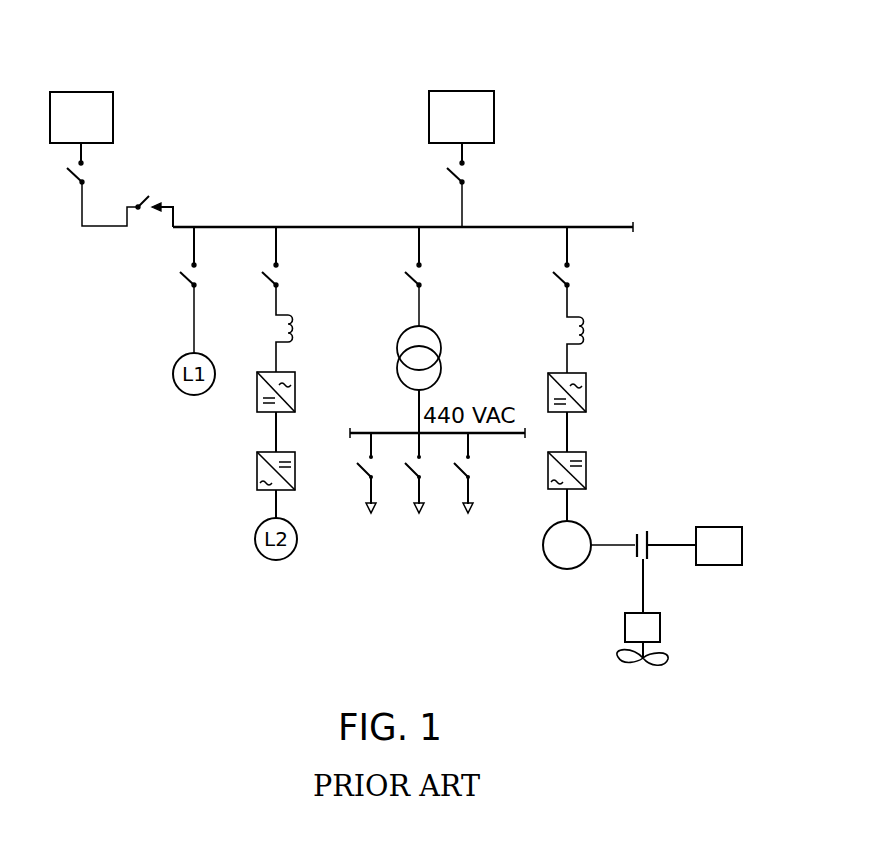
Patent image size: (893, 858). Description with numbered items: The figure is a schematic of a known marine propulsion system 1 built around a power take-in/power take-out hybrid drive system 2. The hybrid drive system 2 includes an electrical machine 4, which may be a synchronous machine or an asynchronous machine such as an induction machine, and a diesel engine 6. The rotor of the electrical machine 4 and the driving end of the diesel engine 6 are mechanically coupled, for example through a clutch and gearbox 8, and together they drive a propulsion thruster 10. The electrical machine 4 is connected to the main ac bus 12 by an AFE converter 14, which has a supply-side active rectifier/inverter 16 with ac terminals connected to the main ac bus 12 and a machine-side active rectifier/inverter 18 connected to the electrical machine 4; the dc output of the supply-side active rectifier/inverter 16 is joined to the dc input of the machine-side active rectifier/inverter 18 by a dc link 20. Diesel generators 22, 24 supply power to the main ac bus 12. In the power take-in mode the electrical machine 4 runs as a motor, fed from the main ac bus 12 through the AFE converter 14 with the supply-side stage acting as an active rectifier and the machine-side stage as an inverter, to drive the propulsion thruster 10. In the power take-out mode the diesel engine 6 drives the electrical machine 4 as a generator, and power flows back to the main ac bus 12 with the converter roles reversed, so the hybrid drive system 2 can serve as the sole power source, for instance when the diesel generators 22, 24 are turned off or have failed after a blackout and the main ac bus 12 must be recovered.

The marine propulsion system 1 is at (466, 63).
The hybrid drive system 2 is at (643, 539).
The electrical machine 4 is at (567, 570).
The diesel engine 6 is at (718, 526).
The clutch and gearbox 8 is at (650, 558).
The propulsion thruster 10 is at (661, 628).
The main ac bus 12 is at (598, 226).
The AFE converter 14 is at (610, 358).
The supply-side active rectifier/inverter 16 is at (587, 374).
The machine-side active rectifier/inverter 18 is at (587, 465).
The dc link 20 is at (568, 428).
The diesel generator 22 is at (113, 113).
The diesel generator 24 is at (494, 113).